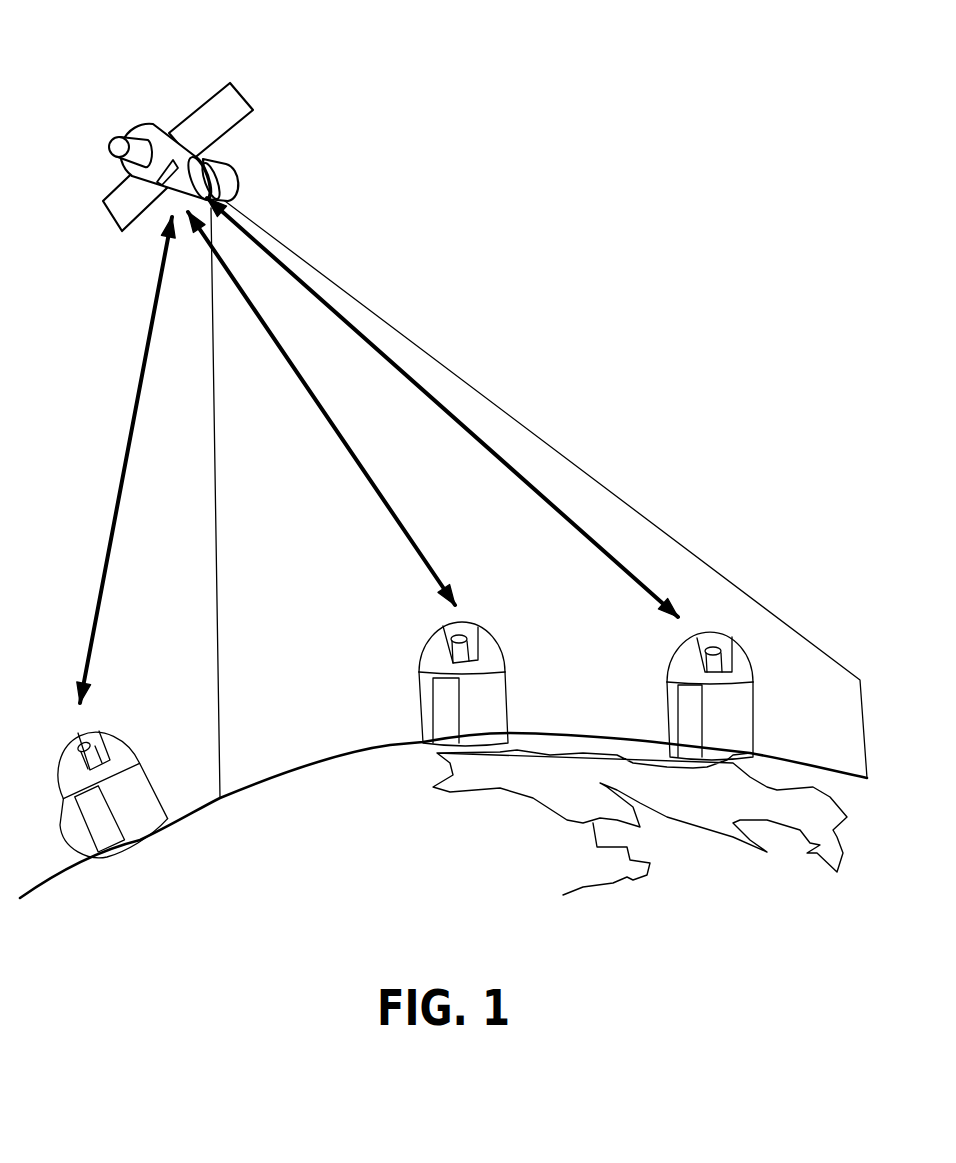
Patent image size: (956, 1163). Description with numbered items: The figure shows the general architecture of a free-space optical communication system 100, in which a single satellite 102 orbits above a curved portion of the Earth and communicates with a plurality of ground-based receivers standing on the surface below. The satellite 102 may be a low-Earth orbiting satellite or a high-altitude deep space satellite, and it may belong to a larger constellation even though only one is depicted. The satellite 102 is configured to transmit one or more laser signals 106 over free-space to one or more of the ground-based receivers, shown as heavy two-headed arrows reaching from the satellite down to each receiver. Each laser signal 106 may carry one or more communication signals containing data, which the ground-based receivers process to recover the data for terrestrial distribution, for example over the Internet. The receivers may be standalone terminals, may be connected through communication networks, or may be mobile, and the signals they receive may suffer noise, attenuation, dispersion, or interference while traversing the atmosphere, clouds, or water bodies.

The free-space optical communication system 100 is at (652, 215).
The satellite 102 is at (192, 118).
The laser signal 106 is at (135, 410).